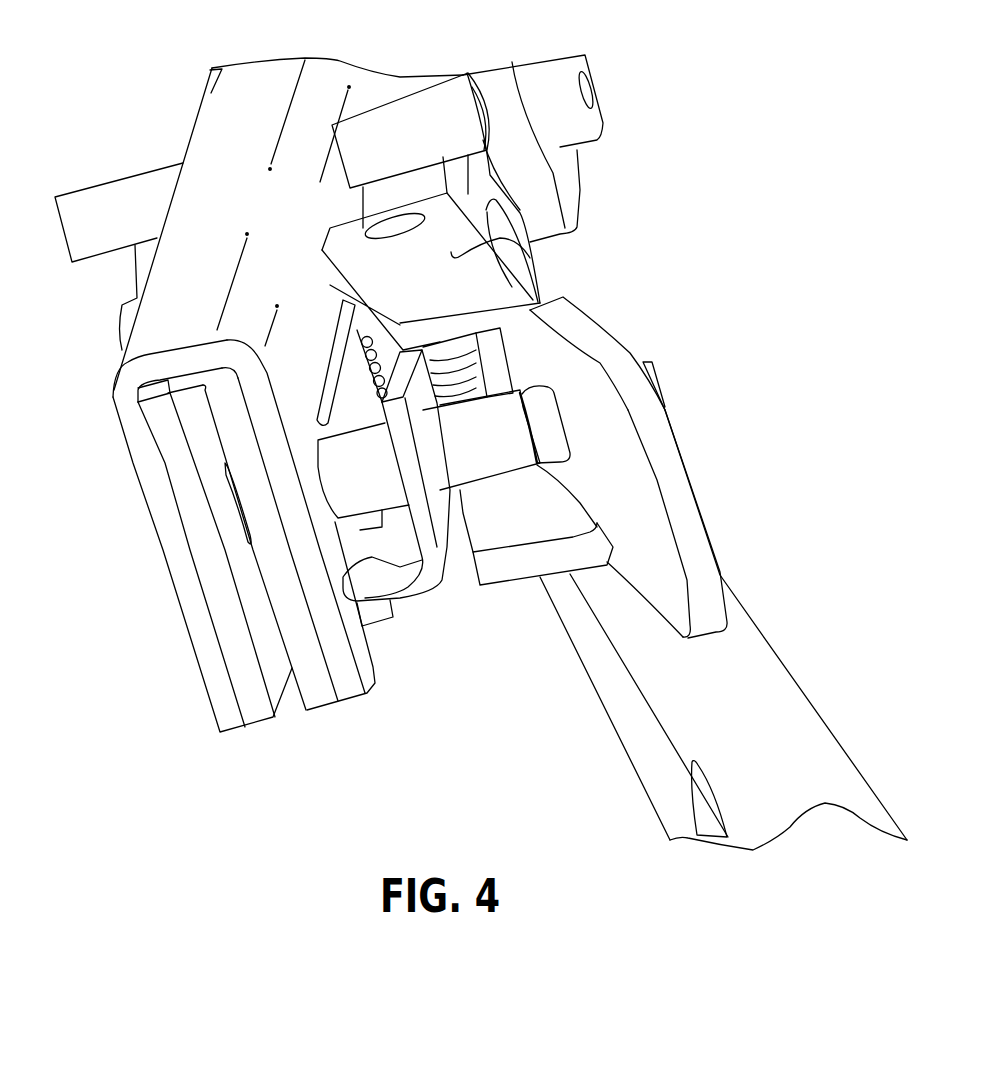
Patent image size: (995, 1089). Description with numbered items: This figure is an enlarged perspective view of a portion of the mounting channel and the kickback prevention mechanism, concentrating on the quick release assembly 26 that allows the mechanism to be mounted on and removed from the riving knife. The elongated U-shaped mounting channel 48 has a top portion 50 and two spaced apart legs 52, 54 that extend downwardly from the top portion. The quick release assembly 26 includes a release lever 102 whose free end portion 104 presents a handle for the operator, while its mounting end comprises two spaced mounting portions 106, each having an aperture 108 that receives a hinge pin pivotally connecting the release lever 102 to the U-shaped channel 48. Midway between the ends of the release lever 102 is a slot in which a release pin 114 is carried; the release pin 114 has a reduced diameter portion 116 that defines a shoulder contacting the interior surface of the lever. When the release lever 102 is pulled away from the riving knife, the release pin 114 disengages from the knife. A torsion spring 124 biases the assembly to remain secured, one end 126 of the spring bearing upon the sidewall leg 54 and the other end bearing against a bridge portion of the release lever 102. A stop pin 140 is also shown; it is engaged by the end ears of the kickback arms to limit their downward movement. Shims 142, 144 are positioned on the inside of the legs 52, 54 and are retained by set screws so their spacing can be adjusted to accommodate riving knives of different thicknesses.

The quick release assembly 26 is at (705, 372).
The U-shaped mounting channel 48 is at (206, 555).
The top portion 50 is at (240, 128).
The leg 52 is at (160, 503).
The leg 54 is at (297, 393).
The release lever 102 is at (607, 330).
The free end portion 104 is at (677, 490).
The mounting portion 106 is at (380, 260).
The aperture 108 is at (368, 232).
The release pin 114 is at (483, 458).
The reduced diameter portion 116 is at (547, 427).
The torsion spring 124 is at (467, 357).
The end of torsion spring 126 is at (328, 397).
The stop pin 140 is at (112, 217).
The shim 142 is at (213, 588).
The shim 144 is at (320, 690).